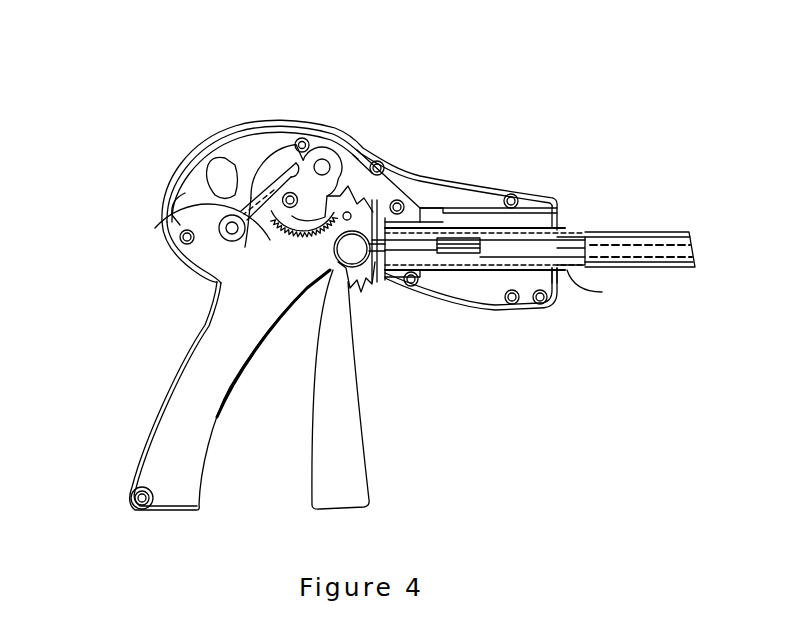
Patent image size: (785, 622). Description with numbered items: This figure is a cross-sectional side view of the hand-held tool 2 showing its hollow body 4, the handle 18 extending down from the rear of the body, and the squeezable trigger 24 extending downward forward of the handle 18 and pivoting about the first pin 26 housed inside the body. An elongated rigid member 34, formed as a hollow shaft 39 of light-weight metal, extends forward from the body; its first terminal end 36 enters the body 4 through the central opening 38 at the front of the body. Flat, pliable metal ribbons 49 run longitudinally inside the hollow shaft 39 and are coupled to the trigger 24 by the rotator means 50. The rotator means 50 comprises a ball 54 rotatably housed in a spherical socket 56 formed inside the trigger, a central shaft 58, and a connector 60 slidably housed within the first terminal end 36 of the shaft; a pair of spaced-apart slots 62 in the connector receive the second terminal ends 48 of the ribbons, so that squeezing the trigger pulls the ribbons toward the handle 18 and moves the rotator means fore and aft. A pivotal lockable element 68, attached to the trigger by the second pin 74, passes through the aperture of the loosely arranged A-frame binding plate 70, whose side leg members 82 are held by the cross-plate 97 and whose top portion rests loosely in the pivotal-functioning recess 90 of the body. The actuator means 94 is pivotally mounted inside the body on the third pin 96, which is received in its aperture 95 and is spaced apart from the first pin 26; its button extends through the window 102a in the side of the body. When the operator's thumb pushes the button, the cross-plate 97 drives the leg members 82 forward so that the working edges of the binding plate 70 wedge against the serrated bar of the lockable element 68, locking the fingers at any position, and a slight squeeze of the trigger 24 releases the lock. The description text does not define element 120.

The hand-held tool 2 is at (403, 72).
The hollow body 4 is at (177, 151).
The handle 18 is at (218, 428).
The trigger 24 is at (353, 447).
The first pin 26 is at (324, 159).
The rigid member 34 is at (630, 230).
The first terminal end 36 is at (470, 240).
The central opening 38 is at (558, 280).
The hollow shaft 39 is at (562, 240).
The second terminal end 48 is at (462, 260).
The ribbons 49 is at (584, 268).
The rotator means 50 is at (301, 315).
The ball 54 is at (344, 272).
The spherical socket 56 is at (348, 258).
The central shaft 58 is at (418, 252).
The connector 60 is at (516, 190).
The slots 62 is at (487, 278).
The lockable element 68 is at (375, 160).
The binding plate 70 is at (247, 150).
The second pin 74 is at (404, 182).
The side leg members 82 is at (175, 218).
The pivotal-functioning recess 90 is at (258, 148).
The actuator means 94 is at (151, 203).
The aperture 95 is at (283, 170).
The third pin 96 is at (300, 138).
The cross-plate 97 is at (268, 228).
The window 102a is at (197, 150).
The collar block 120 is at (421, 210).